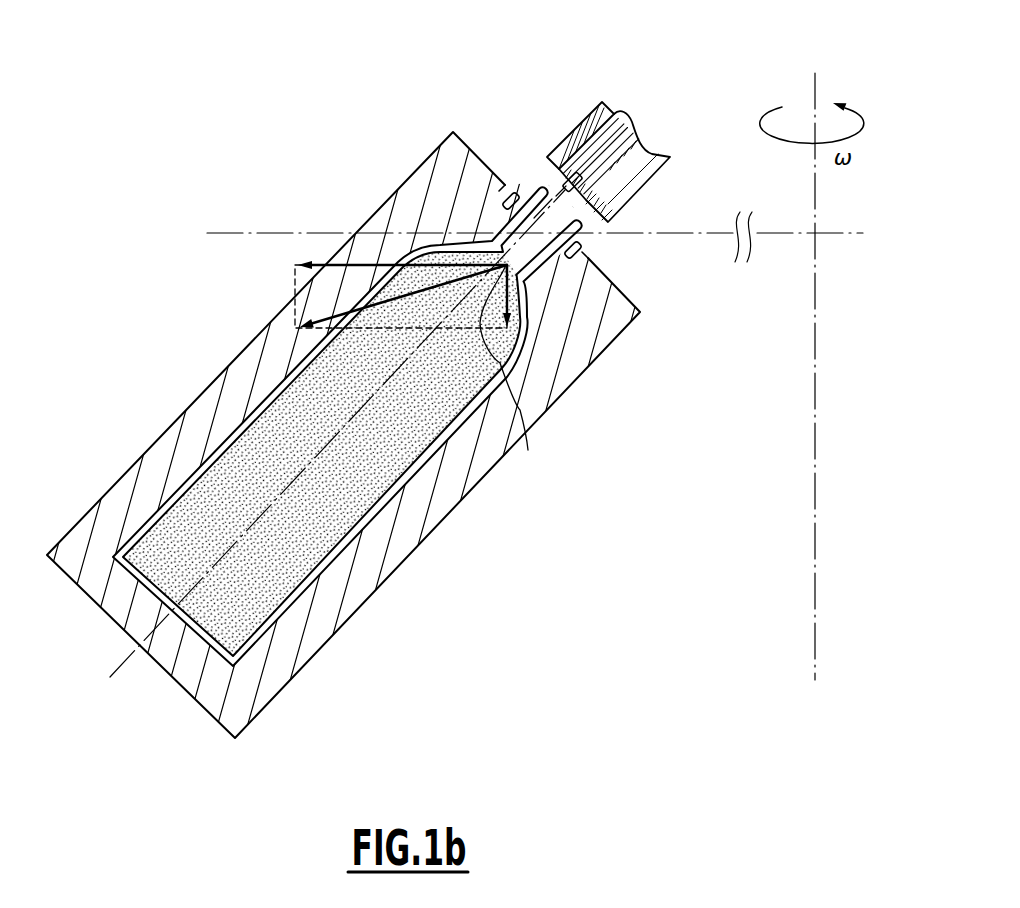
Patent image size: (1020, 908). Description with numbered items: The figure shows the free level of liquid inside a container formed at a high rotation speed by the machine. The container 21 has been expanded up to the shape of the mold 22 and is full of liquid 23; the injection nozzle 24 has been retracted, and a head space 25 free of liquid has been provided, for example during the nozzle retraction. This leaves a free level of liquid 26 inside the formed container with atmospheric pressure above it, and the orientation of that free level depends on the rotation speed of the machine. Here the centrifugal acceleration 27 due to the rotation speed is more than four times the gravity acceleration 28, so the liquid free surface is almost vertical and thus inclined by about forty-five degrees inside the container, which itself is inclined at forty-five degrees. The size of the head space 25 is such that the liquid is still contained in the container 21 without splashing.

The container 21 is at (278, 613).
The mold 22 is at (357, 565).
The liquid 23 is at (357, 487).
The injection nozzle 24 is at (578, 119).
The head space 25 is at (540, 214).
The free level of liquid 26 is at (512, 250).
The centrifugal acceleration 27 is at (348, 262).
The gravity acceleration 28 is at (510, 372).